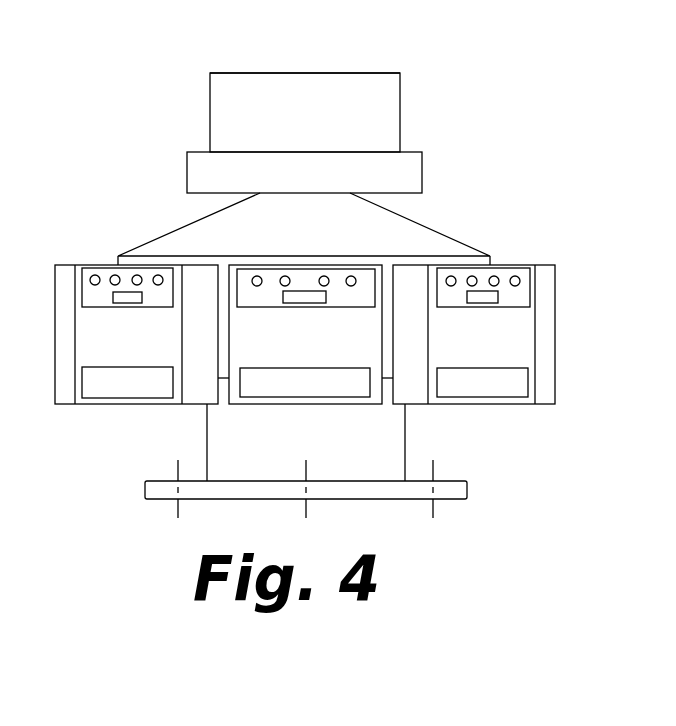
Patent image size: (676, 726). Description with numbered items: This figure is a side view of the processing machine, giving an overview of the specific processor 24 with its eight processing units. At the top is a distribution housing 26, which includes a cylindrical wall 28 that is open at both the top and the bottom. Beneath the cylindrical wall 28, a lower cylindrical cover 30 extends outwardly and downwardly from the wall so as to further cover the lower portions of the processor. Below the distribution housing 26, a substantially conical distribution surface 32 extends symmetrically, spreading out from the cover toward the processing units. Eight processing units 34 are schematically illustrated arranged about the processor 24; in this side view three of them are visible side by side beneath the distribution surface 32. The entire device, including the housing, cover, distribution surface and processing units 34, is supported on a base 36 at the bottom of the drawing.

The processor 24 is at (456, 118).
The distribution housing 26 is at (302, 72).
The cylindrical wall 28 is at (210, 107).
The lower cylindrical cover 30 is at (422, 176).
The conical distribution surface 32 is at (445, 236).
The processing units 34 is at (555, 300).
The base 36 is at (405, 443).